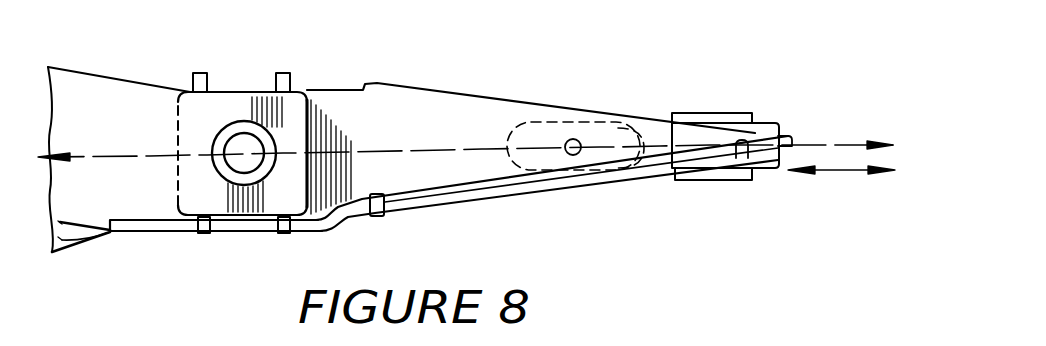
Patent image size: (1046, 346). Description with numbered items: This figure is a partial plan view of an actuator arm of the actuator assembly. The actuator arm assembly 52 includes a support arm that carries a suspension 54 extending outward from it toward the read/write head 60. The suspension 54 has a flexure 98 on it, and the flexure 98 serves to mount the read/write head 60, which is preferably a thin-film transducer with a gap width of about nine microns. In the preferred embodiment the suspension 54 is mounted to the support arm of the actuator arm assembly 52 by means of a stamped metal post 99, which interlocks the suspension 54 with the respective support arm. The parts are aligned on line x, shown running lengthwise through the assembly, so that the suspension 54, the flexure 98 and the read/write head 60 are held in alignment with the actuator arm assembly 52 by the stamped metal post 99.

The actuator arm assembly 52 is at (133, 93).
The suspension 54 is at (482, 118).
The read/write head 60 is at (748, 113).
The flexure 98 is at (773, 163).
The stamped metal post 99 is at (235, 124).
The line X x is at (833, 145).